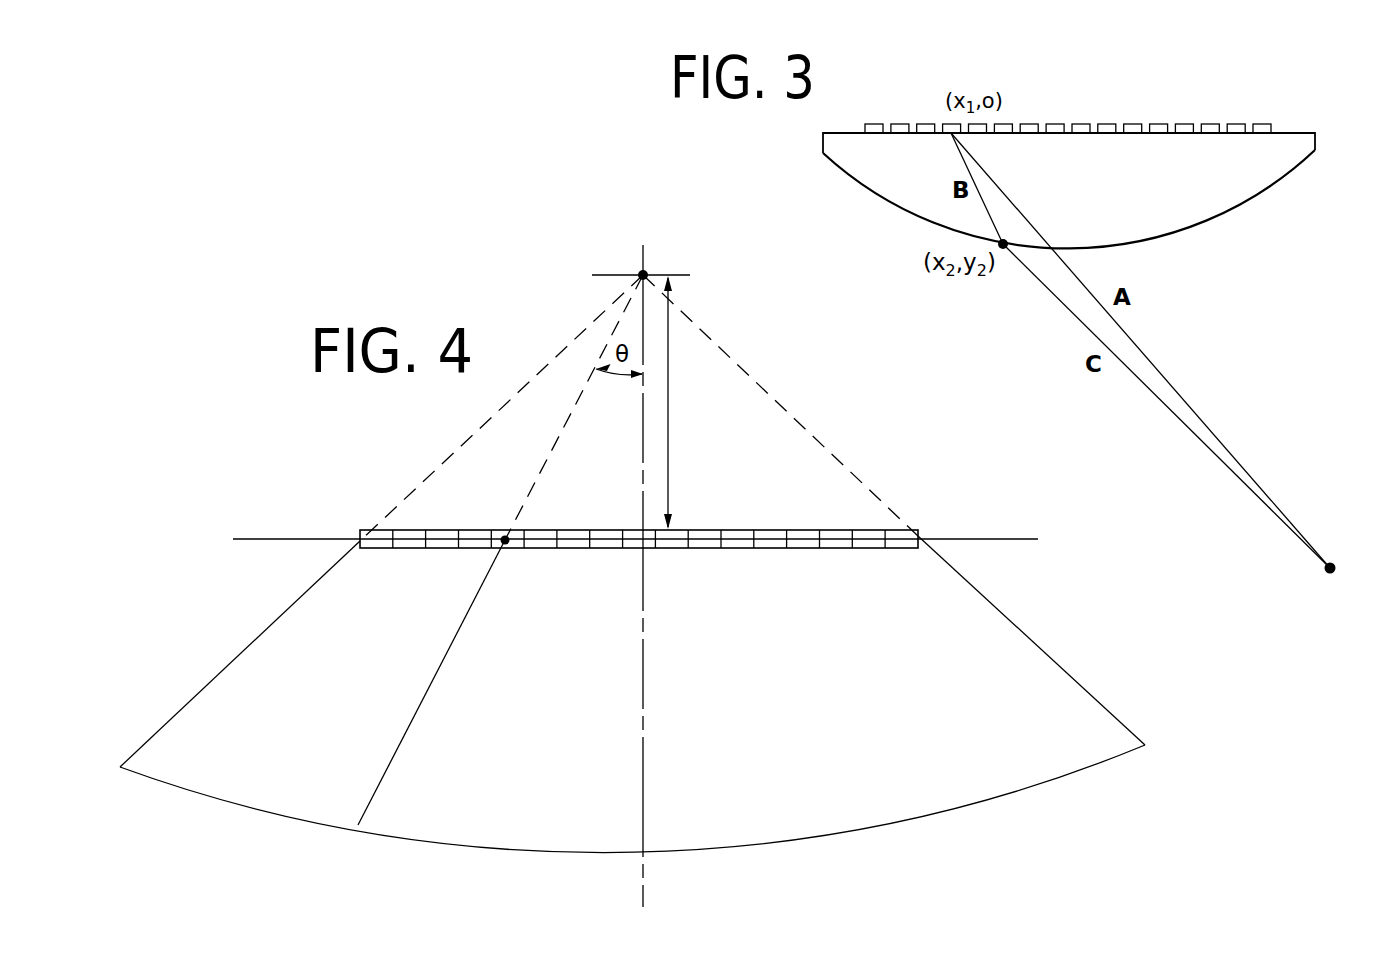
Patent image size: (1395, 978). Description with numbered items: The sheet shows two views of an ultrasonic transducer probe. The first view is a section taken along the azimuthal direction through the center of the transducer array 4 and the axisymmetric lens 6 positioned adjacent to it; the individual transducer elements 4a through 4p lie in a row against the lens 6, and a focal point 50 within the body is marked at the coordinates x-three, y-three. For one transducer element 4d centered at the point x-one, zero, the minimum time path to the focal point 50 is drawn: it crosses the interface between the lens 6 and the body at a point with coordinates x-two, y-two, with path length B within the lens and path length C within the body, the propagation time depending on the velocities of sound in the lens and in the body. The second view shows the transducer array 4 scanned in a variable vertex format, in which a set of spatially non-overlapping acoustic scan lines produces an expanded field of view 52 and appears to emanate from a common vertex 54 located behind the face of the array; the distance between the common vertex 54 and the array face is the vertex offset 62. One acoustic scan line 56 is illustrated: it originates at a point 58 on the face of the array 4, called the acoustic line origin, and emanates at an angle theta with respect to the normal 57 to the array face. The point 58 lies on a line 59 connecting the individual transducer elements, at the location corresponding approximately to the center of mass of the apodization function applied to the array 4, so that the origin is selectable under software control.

In FIG. 3, the transducer array 4 is at (1083, 96).
In FIG. 4, the transducer array 4 is at (814, 522).
In FIG. 3, the transducer element 4a is at (872, 124).
In FIG. 3, the transducer element 4d is at (953, 124).
In FIG. 3, the transducer element 4p is at (1262, 124).
In FIG. 3, the lens 6 is at (1237, 172).
In FIG. 3, the focal point 50 is at (1195, 428).
In FIG. 4, the field of view 52 is at (731, 778).
In FIG. 4, the common vertex 54 is at (641, 273).
In FIG. 4, the acoustic scan line 56 is at (463, 628).
In FIG. 4, the normal 57 is at (645, 872).
In FIG. 4, the point 58 is at (505, 535).
In FIG. 4, the line 59 is at (300, 539).
In FIG. 4, the vertex offset 62 is at (662, 402).